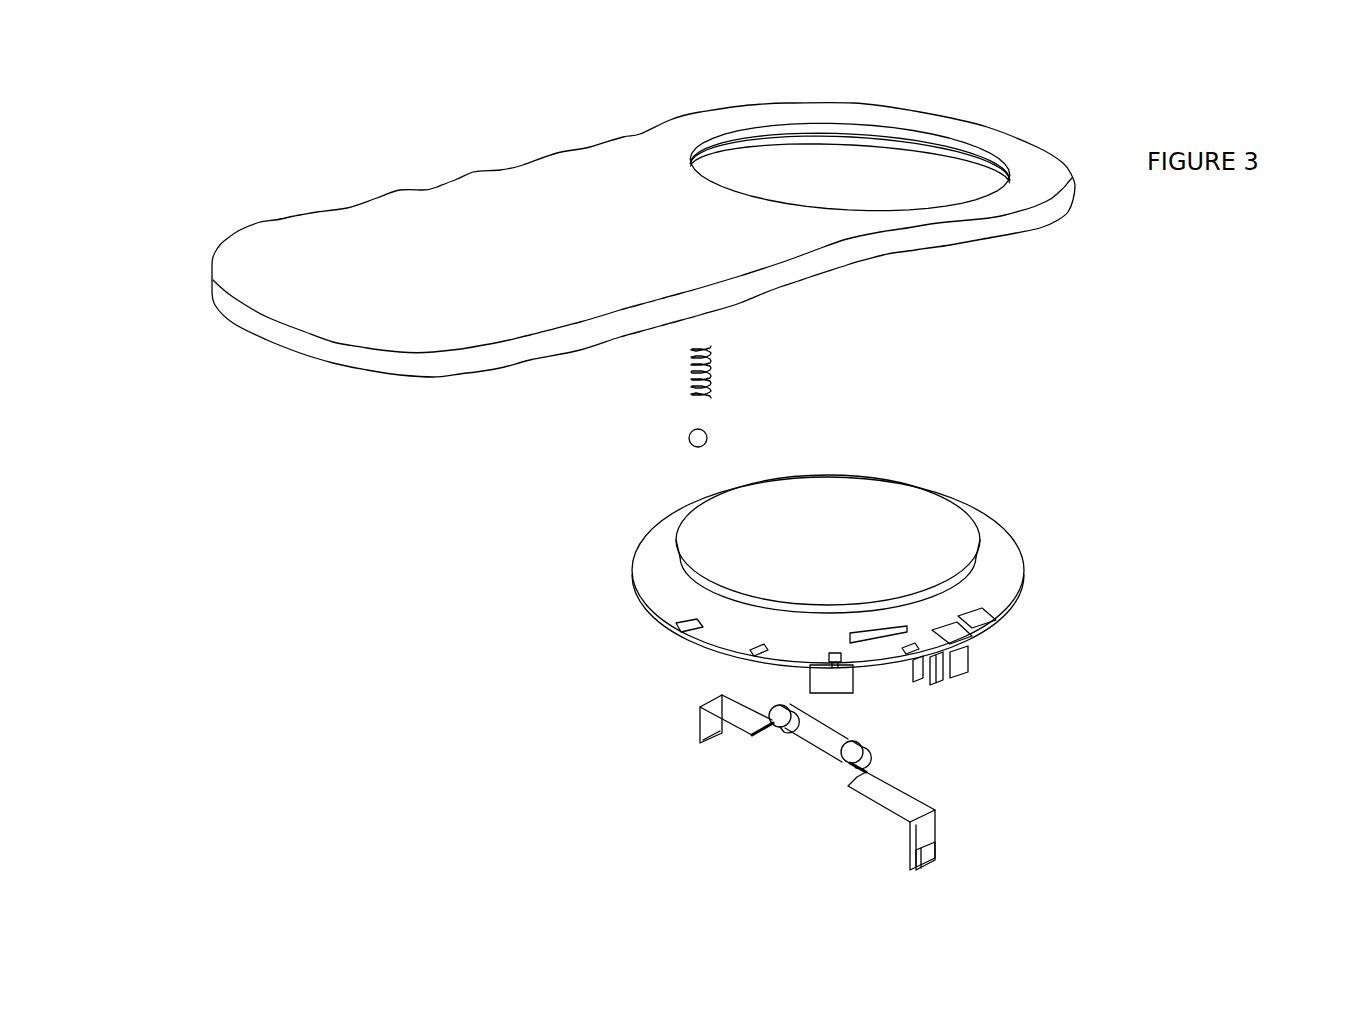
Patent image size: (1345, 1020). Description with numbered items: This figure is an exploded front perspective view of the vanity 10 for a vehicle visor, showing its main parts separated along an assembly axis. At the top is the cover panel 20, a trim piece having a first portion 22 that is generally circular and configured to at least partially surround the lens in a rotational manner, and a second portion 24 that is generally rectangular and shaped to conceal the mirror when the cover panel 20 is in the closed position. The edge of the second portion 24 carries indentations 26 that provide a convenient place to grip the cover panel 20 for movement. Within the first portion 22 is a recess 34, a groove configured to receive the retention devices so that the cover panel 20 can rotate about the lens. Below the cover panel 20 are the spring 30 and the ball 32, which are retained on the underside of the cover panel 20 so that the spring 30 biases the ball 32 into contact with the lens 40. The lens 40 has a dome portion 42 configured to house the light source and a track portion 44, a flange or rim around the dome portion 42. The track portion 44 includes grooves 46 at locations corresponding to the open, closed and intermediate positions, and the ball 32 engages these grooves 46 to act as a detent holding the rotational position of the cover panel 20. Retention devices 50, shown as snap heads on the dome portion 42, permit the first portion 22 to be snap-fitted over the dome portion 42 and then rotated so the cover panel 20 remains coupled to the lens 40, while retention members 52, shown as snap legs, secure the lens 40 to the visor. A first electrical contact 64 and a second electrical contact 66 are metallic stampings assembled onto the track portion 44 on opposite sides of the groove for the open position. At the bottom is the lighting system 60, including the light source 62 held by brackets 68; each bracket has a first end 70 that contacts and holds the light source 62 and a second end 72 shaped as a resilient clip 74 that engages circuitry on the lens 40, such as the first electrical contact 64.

The vanity 10 is at (452, 543).
The cover panel 20 is at (467, 315).
The first portion 22 is at (1057, 226).
The second portion 24 is at (258, 255).
The indentations 26 is at (436, 187).
The spring 30 is at (711, 365).
The ball 32 is at (707, 443).
The recess 34 is at (851, 134).
The lens 40 is at (788, 543).
The dome portion 42 is at (883, 505).
The track portion 44 is at (658, 582).
The grooves 46 is at (685, 626).
The retention devices 50 is at (887, 637).
The retention members 52 is at (810, 676).
The lighting system 60 is at (800, 791).
The light source 62 is at (818, 748).
The first electrical contact 64 is at (977, 630).
The second electrical contact 66 is at (978, 622).
The brackets 68 is at (748, 720).
The first end 70 is at (788, 733).
The second end 72 is at (700, 741).
The resilient clip 74 is at (933, 870).